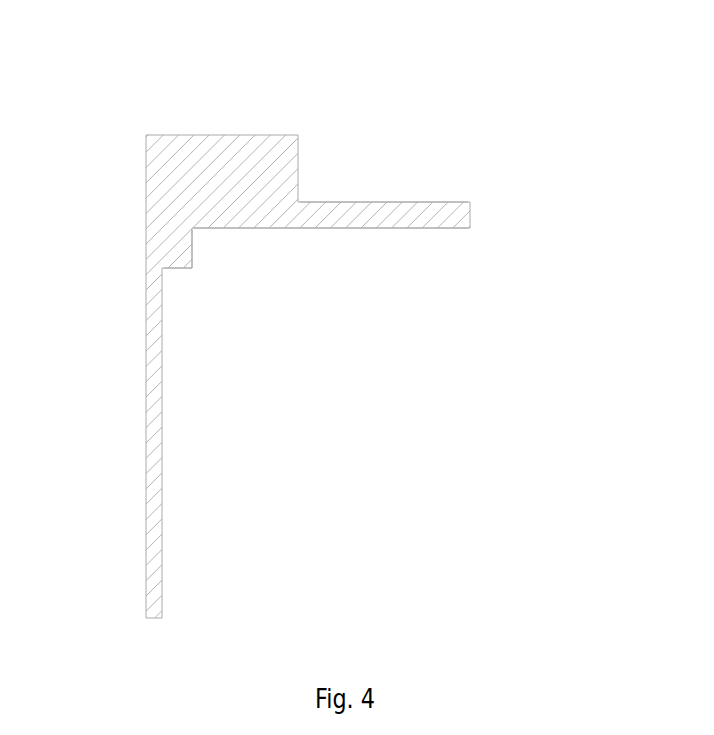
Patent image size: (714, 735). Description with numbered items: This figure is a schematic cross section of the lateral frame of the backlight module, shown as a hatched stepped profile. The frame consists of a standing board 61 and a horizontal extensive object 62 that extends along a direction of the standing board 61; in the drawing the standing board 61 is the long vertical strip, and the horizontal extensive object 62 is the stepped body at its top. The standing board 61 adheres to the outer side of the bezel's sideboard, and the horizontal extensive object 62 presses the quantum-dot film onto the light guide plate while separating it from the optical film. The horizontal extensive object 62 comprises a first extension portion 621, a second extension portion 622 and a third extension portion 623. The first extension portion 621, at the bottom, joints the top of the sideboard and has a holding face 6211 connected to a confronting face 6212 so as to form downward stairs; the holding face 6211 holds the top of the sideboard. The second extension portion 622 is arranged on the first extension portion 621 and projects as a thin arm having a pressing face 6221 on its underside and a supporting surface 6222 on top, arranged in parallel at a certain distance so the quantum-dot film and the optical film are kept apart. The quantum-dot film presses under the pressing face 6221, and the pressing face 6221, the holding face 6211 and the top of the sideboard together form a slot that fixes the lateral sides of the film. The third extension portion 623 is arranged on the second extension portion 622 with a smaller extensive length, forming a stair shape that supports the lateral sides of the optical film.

The standing board 61 is at (157, 482).
The horizontal extensive object 62 is at (480, 82).
The first extension portion 621 is at (292, 245).
The holding face 6211 is at (178, 268).
The confronting face 6212 is at (193, 240).
The second extension portion 622 is at (553, 150).
The pressing face 6221 is at (440, 228).
The supporting surface 6222 is at (420, 202).
The third extension portion 623 is at (243, 147).